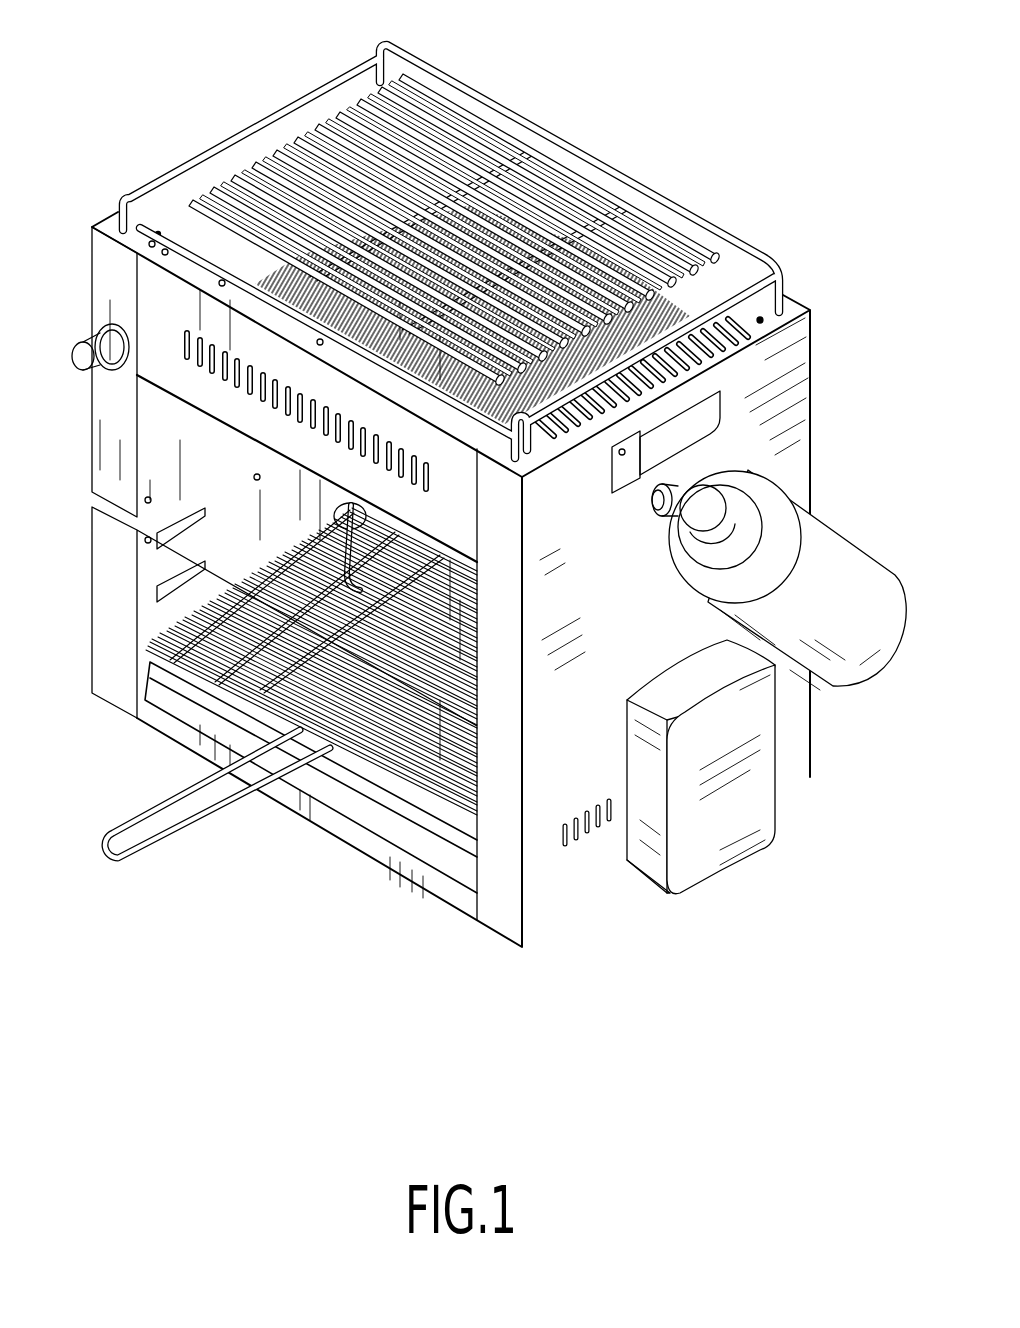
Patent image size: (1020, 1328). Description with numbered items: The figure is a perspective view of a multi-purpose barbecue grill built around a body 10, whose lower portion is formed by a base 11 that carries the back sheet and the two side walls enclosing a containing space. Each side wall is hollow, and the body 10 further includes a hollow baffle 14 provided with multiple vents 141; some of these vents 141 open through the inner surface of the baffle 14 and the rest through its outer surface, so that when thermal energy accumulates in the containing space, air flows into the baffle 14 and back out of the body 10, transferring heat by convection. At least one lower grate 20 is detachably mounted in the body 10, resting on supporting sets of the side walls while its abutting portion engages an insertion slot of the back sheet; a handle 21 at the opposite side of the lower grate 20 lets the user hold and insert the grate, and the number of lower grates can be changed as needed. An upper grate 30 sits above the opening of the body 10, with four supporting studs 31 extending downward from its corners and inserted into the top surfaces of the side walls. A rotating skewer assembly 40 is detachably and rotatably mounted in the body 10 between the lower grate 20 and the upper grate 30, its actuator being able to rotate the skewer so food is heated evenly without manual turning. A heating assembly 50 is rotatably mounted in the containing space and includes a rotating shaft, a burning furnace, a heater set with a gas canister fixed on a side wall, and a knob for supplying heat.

The body 10 is at (450, 935).
The base 11 is at (338, 862).
The baffle 14 is at (160, 395).
The vents 141 is at (183, 332).
The lower grate 20 is at (130, 775).
The handle 21 is at (127, 862).
The upper grate 30 is at (467, 238).
The supporting studs 31 is at (383, 48).
The rotating skewer assembly 40 is at (760, 885).
The heating assembly 50 is at (843, 500).